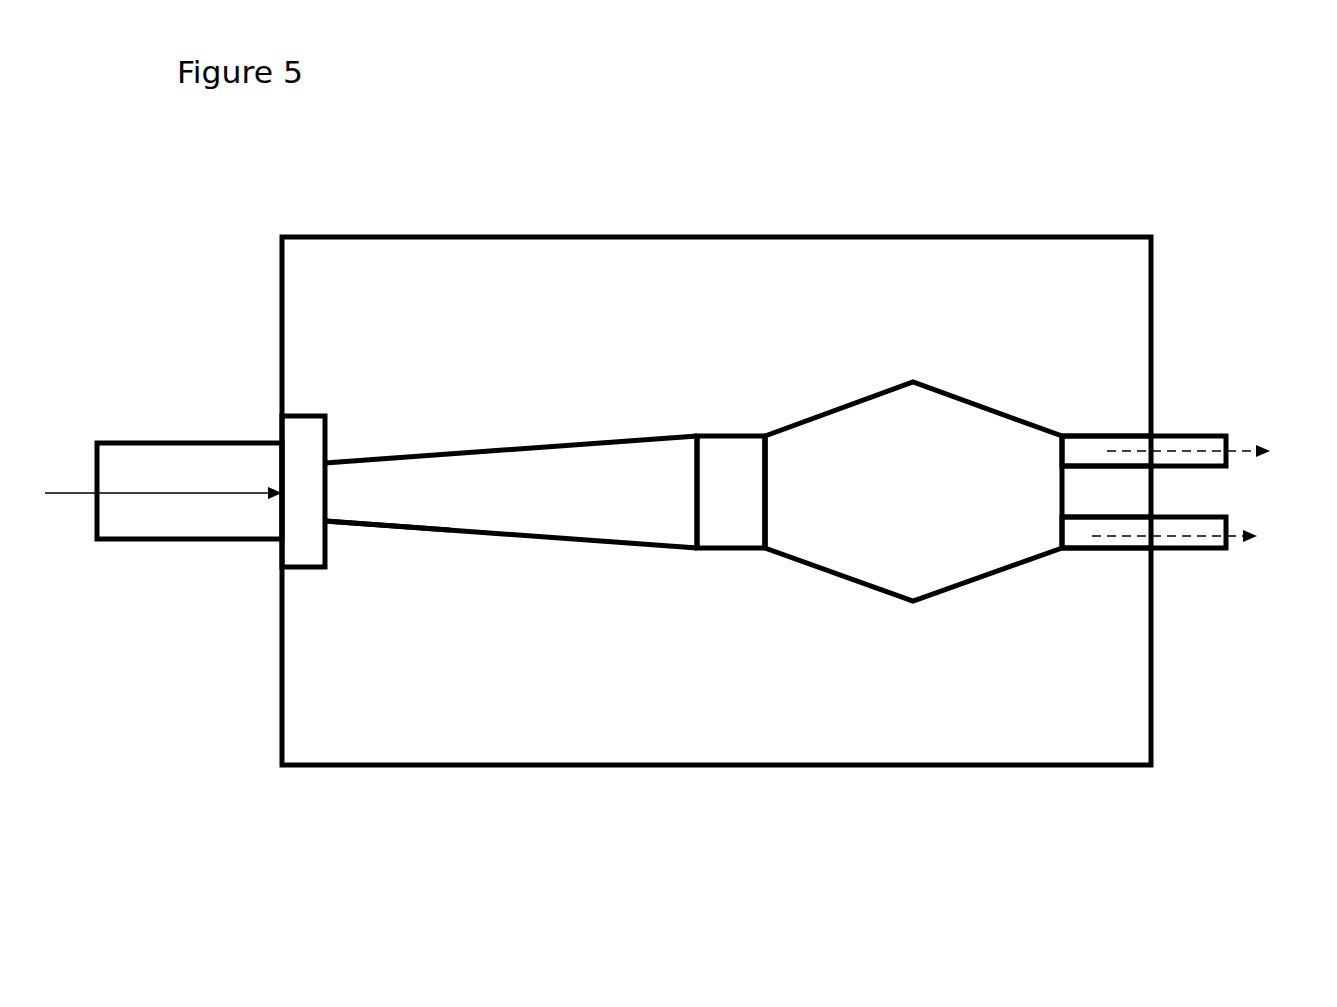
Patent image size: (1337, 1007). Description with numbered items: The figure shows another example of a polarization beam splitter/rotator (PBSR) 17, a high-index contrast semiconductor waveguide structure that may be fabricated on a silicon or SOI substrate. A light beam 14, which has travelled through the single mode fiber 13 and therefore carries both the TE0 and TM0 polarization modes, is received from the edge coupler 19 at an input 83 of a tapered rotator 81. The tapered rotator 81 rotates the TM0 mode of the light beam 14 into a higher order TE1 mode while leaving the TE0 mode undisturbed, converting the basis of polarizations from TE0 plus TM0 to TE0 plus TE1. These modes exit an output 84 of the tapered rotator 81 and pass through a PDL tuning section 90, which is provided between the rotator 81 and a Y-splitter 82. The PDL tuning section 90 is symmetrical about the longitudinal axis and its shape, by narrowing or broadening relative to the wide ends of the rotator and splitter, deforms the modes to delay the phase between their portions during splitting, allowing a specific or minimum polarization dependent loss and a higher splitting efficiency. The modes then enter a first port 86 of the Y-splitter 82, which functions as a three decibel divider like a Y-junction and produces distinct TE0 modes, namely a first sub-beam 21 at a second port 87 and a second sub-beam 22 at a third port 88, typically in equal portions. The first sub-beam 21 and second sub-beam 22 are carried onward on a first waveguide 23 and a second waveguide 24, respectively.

The single mode fiber 13 is at (182, 465).
The light beam 14 is at (128, 495).
The polarization beam splitter/rotator 17 is at (582, 275).
The edge coupler 19 is at (307, 432).
The first sub-beam 21 is at (1175, 447).
The second sub-beam 22 is at (1178, 538).
The first waveguide 23 is at (1220, 433).
The second waveguide 24 is at (1218, 550).
The tapered rotator 81 is at (533, 508).
The Y-splitter 82 is at (990, 578).
The input 83 is at (327, 492).
The output 84 is at (693, 485).
The first port 86 is at (767, 488).
The second port 87 is at (1117, 433).
The third port 88 is at (1122, 550).
The PDL tuning section 90 is at (735, 458).